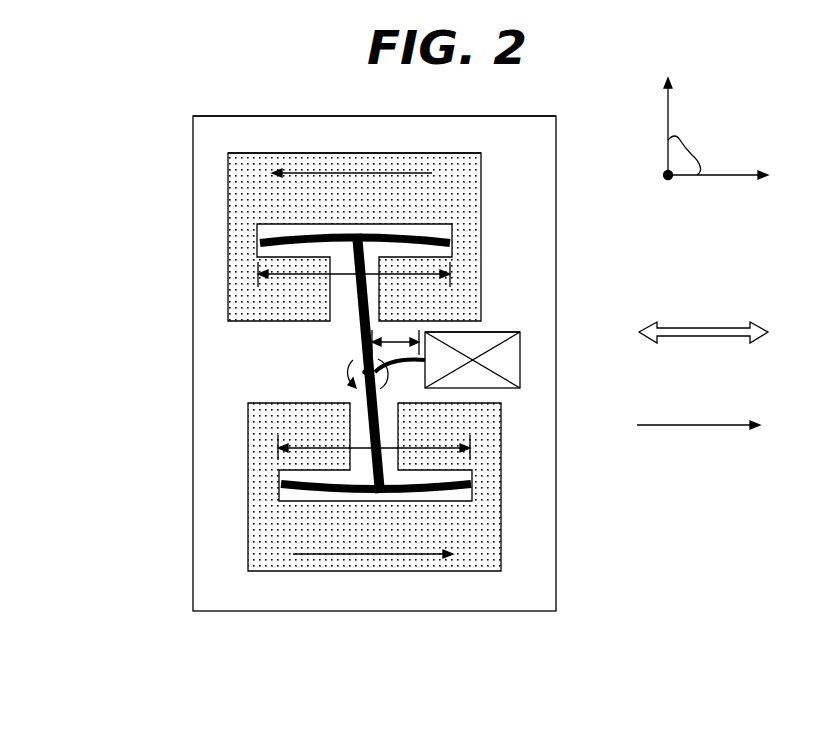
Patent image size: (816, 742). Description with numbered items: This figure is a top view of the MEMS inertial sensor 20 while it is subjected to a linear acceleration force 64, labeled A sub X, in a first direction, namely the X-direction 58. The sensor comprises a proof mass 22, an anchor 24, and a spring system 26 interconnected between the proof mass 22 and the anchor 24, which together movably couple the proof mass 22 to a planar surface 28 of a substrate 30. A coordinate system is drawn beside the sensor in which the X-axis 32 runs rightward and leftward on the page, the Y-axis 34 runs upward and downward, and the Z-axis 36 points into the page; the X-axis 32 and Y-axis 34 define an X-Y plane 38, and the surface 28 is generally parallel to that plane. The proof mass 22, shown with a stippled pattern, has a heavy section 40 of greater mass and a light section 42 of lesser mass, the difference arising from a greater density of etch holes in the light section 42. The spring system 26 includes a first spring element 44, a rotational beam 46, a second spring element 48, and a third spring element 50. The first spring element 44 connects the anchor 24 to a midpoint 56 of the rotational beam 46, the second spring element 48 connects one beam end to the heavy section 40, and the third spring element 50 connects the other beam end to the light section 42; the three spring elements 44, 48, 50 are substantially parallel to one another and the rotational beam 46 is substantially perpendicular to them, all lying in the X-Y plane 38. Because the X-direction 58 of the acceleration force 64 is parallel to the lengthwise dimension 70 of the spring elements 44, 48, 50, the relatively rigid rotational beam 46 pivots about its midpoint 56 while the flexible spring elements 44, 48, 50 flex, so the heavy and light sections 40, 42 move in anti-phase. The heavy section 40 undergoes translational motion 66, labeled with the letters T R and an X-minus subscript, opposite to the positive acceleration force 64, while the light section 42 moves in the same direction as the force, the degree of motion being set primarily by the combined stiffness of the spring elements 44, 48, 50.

The MEMS inertial sensor 20 is at (666, 605).
The proof mass 22 is at (263, 158).
The anchor 24 is at (515, 340).
The spring system 26 is at (327, 371).
The planar surface 28 is at (519, 605).
The substrate 30 is at (212, 122).
The X-axis 32 is at (718, 177).
The Y-axis 34 is at (668, 108).
The Z-axis 36 is at (668, 180).
The X-Y plane 38 is at (690, 150).
The heavy section 40 is at (243, 168).
The light section 42 is at (263, 555).
The first spring element 44 is at (378, 376).
The rotational beam 46 is at (353, 318).
The second spring element 48 is at (285, 235).
The third spring element 50 is at (313, 485).
The midpoint 56 is at (360, 366).
The X-direction 58 is at (685, 327).
The linear acceleration force 64 is at (678, 425).
The translational motion 66 is at (372, 173).
The lengthwise dimension 70 is at (293, 277).